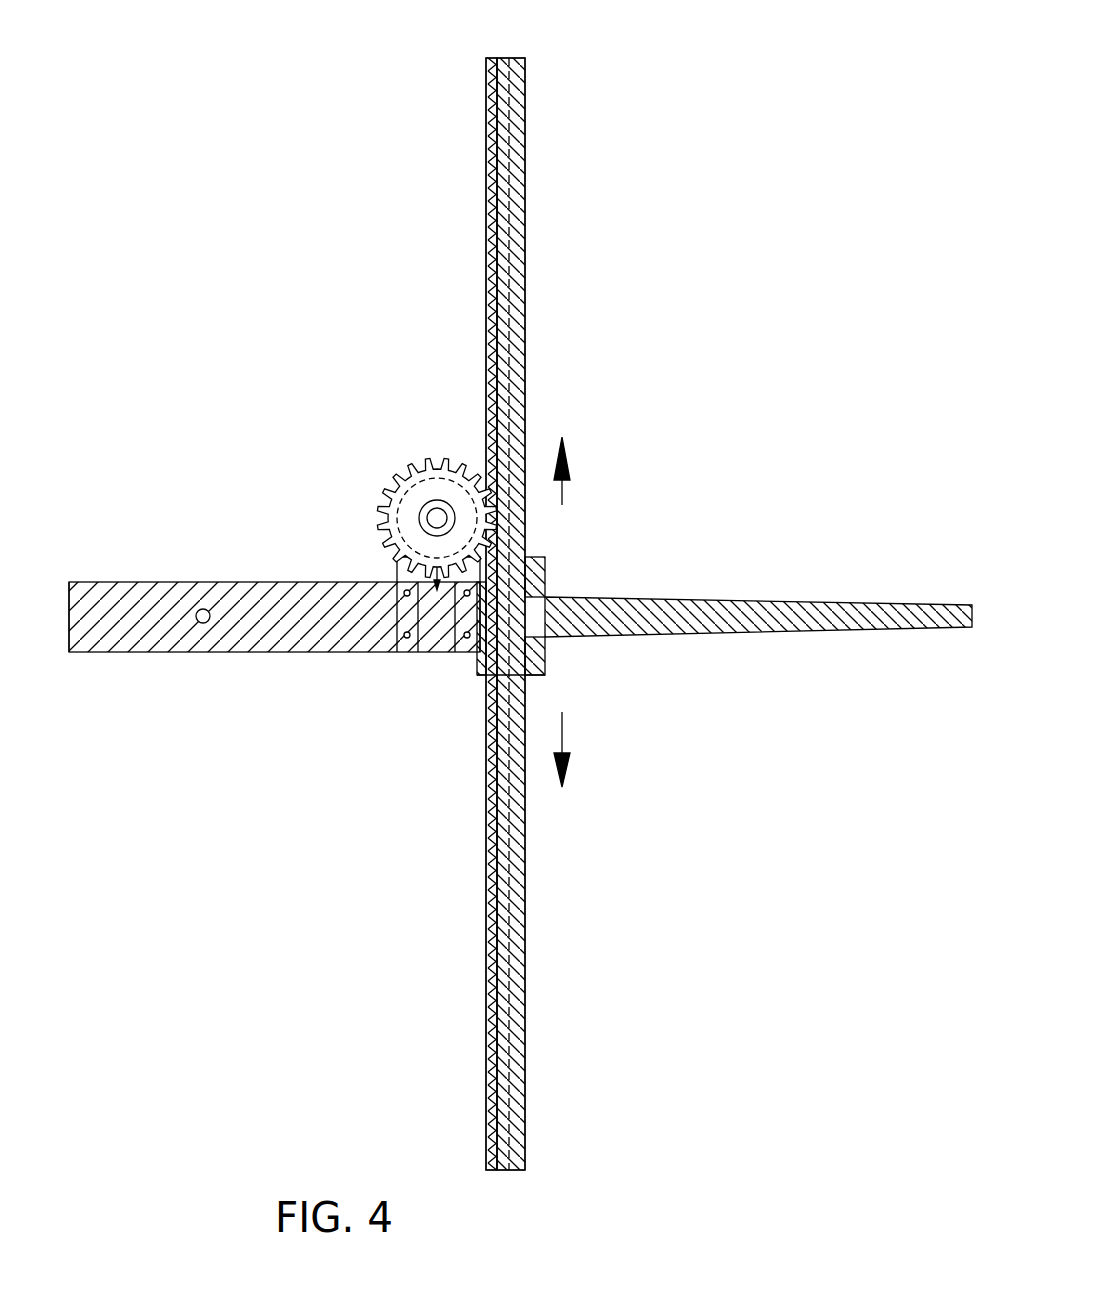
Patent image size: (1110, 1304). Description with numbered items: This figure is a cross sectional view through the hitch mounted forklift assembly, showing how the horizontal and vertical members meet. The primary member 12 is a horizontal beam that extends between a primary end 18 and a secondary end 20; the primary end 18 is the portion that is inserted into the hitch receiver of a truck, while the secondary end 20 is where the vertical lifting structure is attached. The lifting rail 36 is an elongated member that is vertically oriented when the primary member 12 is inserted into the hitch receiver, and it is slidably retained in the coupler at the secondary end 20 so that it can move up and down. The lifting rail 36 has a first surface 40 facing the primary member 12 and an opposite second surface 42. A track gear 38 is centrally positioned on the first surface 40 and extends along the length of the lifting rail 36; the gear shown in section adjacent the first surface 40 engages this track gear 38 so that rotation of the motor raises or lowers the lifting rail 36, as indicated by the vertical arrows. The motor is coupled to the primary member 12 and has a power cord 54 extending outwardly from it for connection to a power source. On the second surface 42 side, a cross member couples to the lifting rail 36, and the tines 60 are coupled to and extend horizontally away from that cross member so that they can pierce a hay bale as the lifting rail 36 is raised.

The primary member 12 is at (268, 549).
The primary end 18 is at (68, 617).
The secondary end 20 is at (497, 625).
The lifting rail 36 is at (493, 585).
The track gear 38 is at (489, 585).
The first surface 40 is at (487, 168).
The second surface 42 is at (525, 182).
The power cord 54 is at (403, 475).
The tines 60 is at (752, 597).